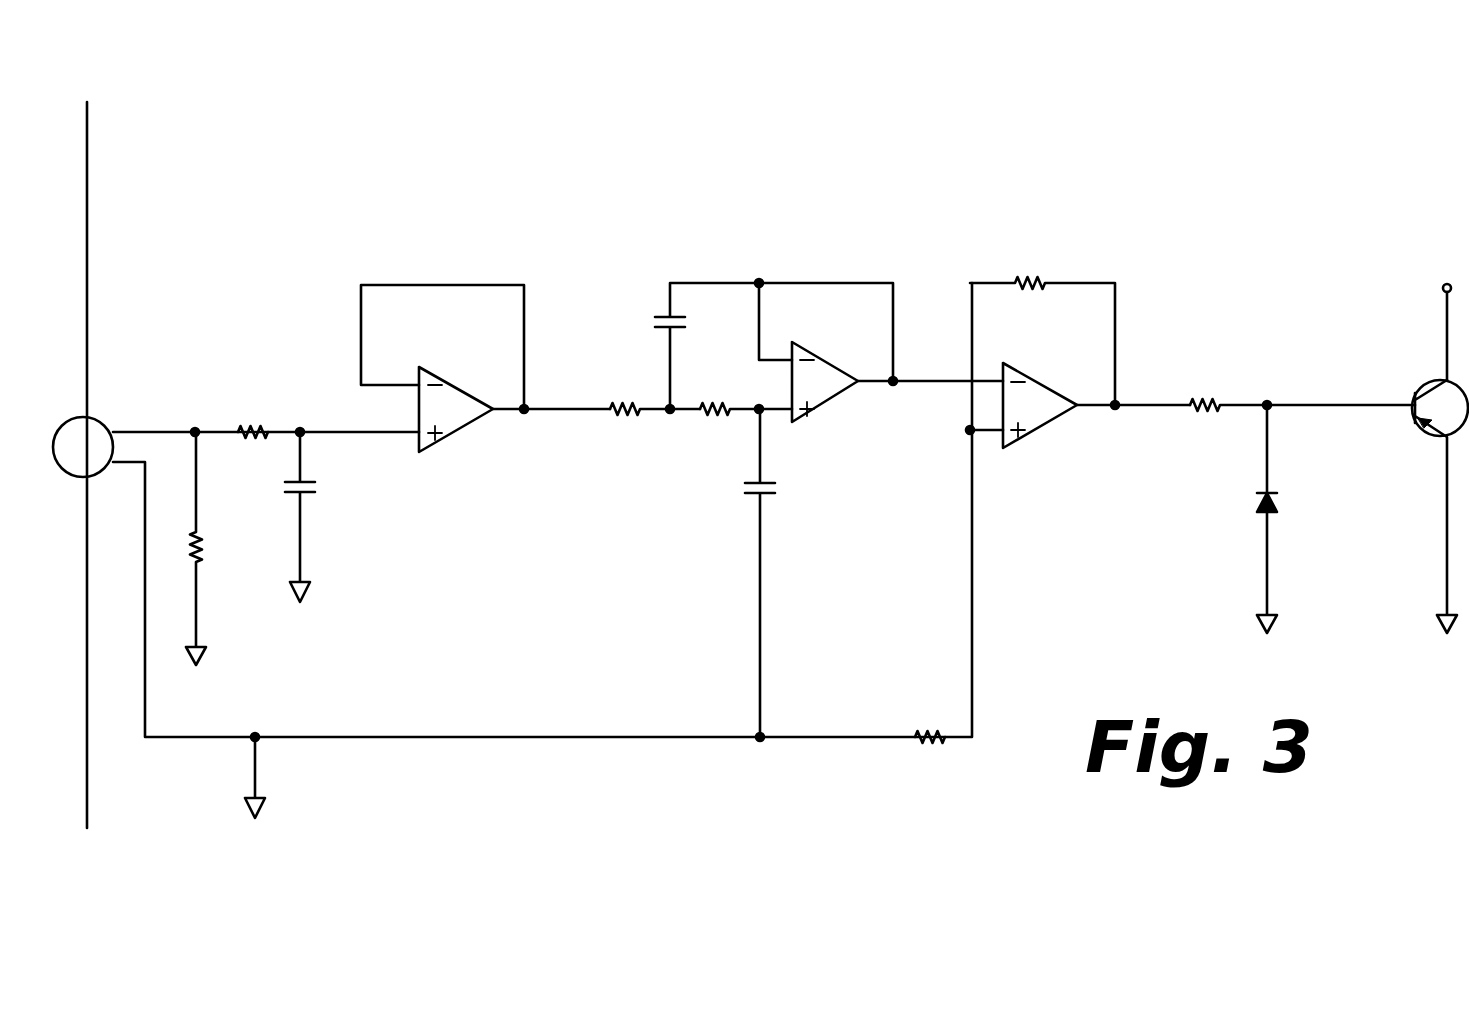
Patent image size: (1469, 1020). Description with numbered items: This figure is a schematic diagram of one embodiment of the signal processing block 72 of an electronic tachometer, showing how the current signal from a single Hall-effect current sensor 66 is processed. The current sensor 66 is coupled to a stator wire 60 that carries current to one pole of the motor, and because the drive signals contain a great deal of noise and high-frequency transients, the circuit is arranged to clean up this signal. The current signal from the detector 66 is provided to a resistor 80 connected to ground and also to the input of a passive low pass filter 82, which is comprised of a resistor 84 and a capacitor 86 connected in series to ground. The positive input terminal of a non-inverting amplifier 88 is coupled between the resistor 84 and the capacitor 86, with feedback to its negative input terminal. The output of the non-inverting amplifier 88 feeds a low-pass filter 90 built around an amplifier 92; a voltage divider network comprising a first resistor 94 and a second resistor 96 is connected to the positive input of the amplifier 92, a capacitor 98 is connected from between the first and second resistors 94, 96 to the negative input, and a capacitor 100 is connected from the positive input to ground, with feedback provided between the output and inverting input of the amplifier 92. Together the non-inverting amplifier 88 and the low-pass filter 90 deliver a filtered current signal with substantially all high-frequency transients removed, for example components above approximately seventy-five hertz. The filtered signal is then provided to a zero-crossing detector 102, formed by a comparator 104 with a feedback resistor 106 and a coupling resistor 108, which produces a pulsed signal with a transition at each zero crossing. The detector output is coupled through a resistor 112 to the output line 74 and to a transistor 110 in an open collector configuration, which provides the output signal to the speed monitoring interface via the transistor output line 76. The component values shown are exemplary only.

The stator wire 60 is at (88, 226).
The current sensor 66 is at (98, 418).
The signal processing block 72 is at (1290, 140).
The output line 74 is at (1340, 404).
The transistor output line 76 is at (1446, 330).
The resistor 80 is at (209, 563).
The passive low pass filter 82 is at (278, 367).
The resistor 84 is at (268, 446).
The capacitor 86 is at (307, 498).
The non-inverting amplifier 88 is at (467, 428).
The low-pass filter 90 is at (731, 238).
The amplifier 92 is at (821, 360).
The first resistor 94 is at (623, 392).
The second resistor 96 is at (707, 396).
The capacitor 98 is at (650, 307).
The capacitor 100 is at (750, 502).
The zero-crossing detector 102 is at (933, 217).
The comparator 104 is at (1055, 420).
The feedback resistor 106 is at (1047, 269).
The coupling resistor 108 is at (925, 718).
The transistor 110 is at (1412, 422).
The resistor 112 is at (1184, 401).